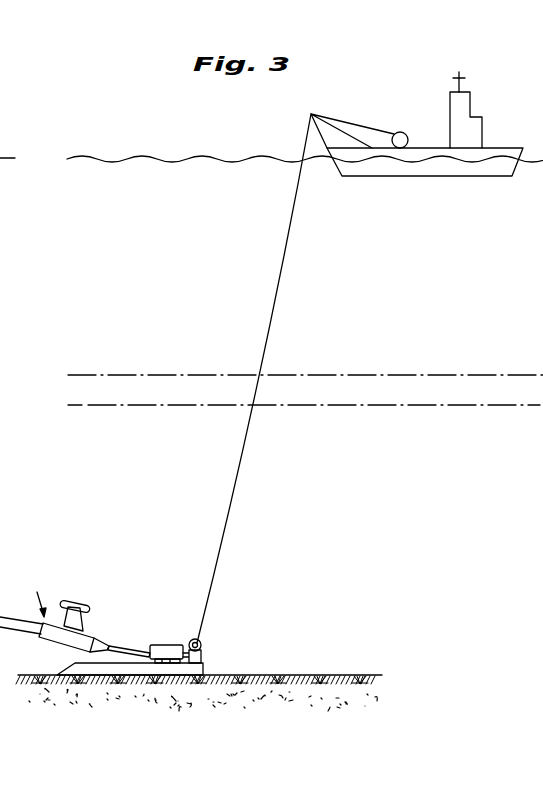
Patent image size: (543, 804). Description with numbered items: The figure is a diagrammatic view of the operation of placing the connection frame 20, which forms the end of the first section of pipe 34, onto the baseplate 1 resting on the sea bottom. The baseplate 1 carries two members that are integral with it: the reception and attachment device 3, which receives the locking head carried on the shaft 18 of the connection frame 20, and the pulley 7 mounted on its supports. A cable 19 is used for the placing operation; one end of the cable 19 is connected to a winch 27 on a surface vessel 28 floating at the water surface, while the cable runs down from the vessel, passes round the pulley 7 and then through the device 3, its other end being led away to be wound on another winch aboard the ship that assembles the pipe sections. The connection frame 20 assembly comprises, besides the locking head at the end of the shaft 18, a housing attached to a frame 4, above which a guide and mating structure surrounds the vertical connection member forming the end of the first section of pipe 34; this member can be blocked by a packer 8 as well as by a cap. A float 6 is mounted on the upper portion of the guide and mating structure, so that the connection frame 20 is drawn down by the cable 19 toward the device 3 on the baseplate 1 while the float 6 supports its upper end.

The baseplate 1 is at (113, 664).
The reception and attachment device 3 is at (167, 645).
The frame 4 is at (65, 635).
The float 6 is at (87, 608).
The pulley 7 is at (195, 639).
The packer 8 is at (7, 137).
The shaft 18 is at (115, 646).
The cable 19 is at (241, 460).
The connection frame 20 is at (39, 592).
The winch 27 is at (400, 132).
The surface vessel 28 is at (492, 155).
The first section of pipe 34 is at (23, 627).